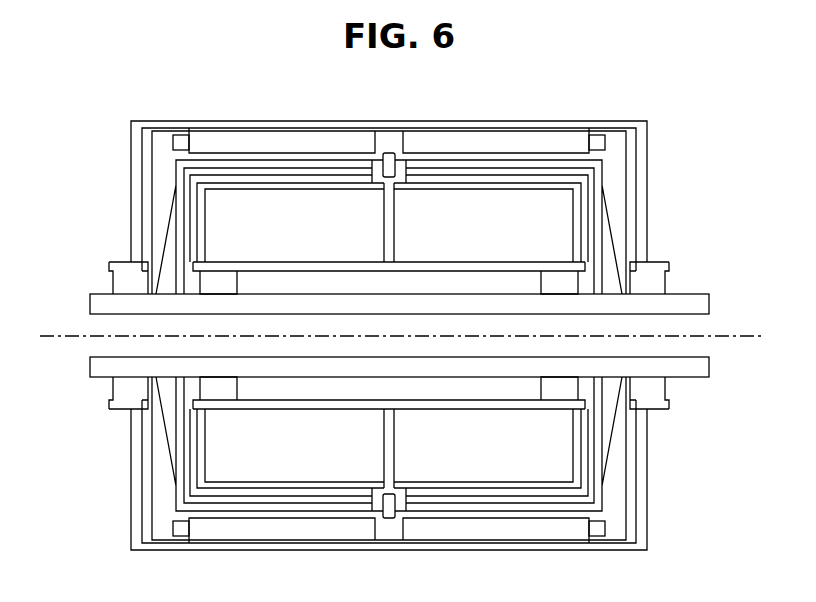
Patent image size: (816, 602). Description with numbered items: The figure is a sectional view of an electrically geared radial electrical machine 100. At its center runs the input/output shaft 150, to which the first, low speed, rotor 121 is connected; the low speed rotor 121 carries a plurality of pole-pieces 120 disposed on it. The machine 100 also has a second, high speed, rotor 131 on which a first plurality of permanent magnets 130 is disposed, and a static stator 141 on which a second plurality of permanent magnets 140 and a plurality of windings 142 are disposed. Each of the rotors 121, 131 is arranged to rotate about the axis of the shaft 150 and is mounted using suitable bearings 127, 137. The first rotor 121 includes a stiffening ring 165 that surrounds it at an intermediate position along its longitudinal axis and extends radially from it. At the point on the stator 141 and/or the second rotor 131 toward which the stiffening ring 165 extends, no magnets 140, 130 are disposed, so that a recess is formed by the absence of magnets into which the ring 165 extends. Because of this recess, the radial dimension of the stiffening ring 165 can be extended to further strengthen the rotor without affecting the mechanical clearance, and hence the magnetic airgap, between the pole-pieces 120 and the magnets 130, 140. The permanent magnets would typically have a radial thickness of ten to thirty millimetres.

The electrical machine 100 is at (682, 527).
The pole-pieces 120 is at (571, 162).
The first, low speed, rotor 121 is at (614, 167).
The bearings 127 is at (666, 280).
The first plurality of permanent magnets 130 is at (571, 497).
The second, high speed, rotor 131 is at (198, 447).
The bearings 137 is at (208, 284).
The second plurality of permanent magnets 140 is at (265, 155).
The static stator 141 is at (549, 142).
The windings 142 is at (173, 142).
The input/output shaft 150 is at (701, 308).
The stiffening ring 165 is at (390, 148).